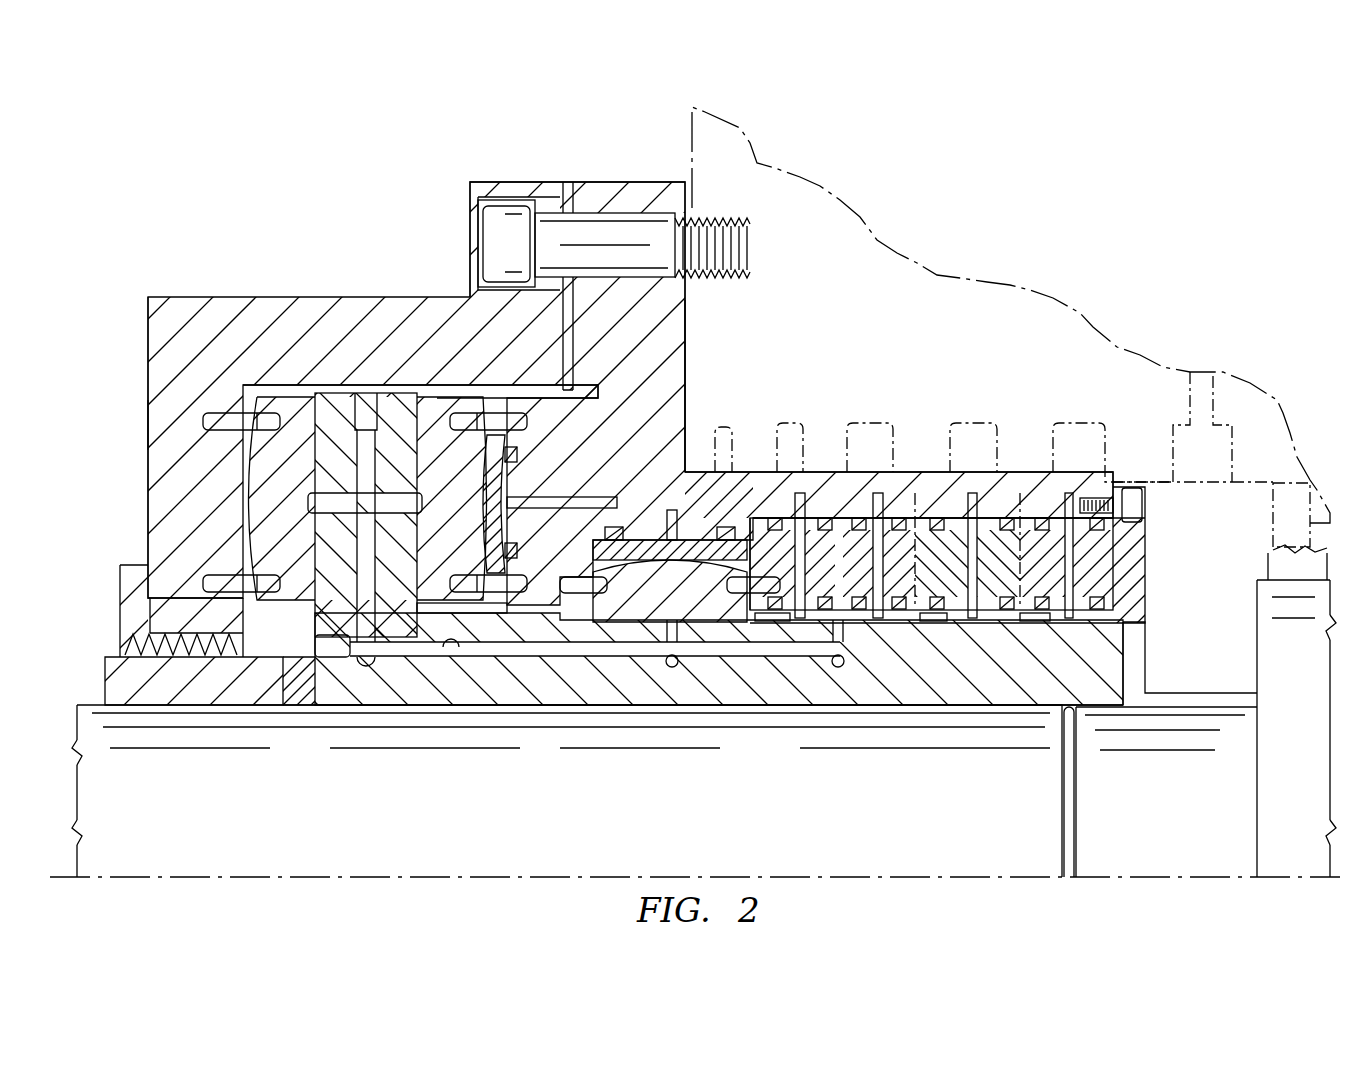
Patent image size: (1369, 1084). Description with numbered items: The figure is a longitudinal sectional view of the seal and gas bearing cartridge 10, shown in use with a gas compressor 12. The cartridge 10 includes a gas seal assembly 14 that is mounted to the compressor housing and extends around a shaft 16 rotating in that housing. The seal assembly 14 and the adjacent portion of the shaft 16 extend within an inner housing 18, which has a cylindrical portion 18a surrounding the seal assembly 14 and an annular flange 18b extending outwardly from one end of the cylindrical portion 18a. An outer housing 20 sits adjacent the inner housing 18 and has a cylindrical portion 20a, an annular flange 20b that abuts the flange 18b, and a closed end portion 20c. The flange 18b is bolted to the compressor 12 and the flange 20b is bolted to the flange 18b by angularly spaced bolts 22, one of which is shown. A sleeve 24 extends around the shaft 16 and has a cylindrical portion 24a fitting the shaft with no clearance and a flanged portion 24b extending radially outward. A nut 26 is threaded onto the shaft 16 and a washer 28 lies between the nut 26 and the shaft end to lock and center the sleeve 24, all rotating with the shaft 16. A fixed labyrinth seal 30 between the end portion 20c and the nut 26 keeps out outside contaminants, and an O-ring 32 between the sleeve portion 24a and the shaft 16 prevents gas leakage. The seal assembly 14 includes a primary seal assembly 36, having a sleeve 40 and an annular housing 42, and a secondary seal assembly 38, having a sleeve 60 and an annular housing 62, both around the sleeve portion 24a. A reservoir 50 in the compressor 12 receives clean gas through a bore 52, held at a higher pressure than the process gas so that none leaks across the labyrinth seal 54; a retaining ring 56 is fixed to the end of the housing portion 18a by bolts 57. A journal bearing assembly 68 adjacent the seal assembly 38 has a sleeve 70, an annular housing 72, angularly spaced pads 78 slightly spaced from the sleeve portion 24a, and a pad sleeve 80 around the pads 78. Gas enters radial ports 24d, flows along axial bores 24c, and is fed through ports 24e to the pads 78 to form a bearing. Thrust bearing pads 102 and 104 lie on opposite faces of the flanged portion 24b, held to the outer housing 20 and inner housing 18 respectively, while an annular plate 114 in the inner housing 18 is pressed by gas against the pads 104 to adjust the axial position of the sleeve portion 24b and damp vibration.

The seal and gas bearing cartridge 10 is at (330, 168).
The gas compressor 12 is at (937, 358).
The gas seal assembly 14 is at (1006, 509).
The shaft 16 is at (437, 824).
The inner housing 18 is at (590, 181).
The cylindrical portion 18a is at (924, 474).
The annular flange 18b is at (685, 362).
The outer housing 20 is at (446, 294).
The cylindrical portion 20a is at (190, 304).
The annular flange 20b is at (520, 186).
The closed end portion 20c is at (148, 421).
The bolts 22 is at (637, 222).
The sleeve 24 is at (546, 707).
The cylindrical portion 24a is at (768, 707).
The flanged portion 24b is at (385, 397).
The axial bores 24c is at (447, 650).
The radial ports 24d is at (838, 667).
The ports 24e is at (672, 667).
The nut 26 is at (105, 665).
The washer 28 is at (298, 690).
The labyrinth seal 30 is at (120, 595).
The O-ring 32 is at (1069, 710).
The primary seal assembly 36 is at (1042, 626).
The secondary seal assembly 38 is at (935, 626).
The sleeve 40 is at (1128, 642).
The annular housing 42 is at (1052, 518).
The reservoir 50 is at (1217, 589).
The bore 52 is at (1190, 372).
The labyrinth seal 54 is at (1300, 483).
The retaining ring 56 is at (1146, 548).
The bolts 57 is at (1143, 505).
The sleeve 60 is at (978, 624).
The annular housing 62 is at (962, 518).
The journal bearing assembly 68 is at (740, 508).
The sleeve 70 is at (872, 624).
The annular housing 72 is at (802, 518).
The pads 78 is at (687, 600).
The pad sleeve 80 is at (660, 540).
The pads 102 is at (285, 400).
The pads 104 is at (405, 416).
The annular plate 114 is at (503, 470).